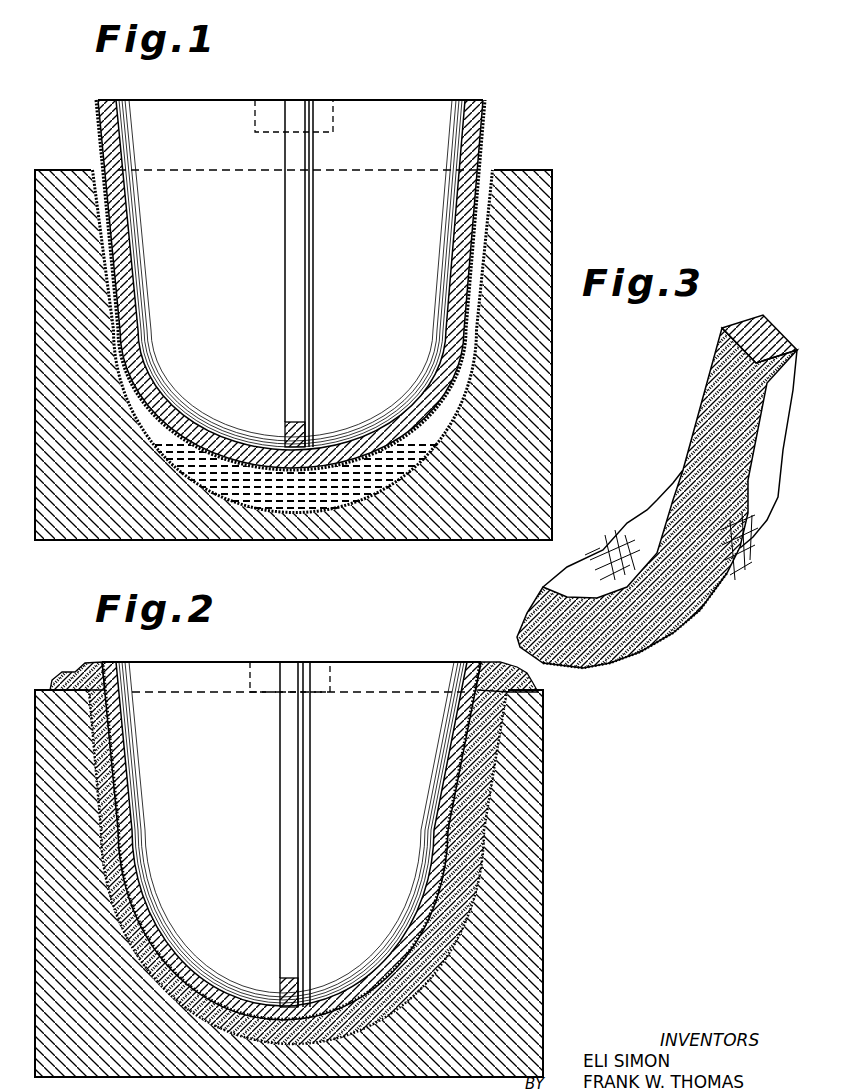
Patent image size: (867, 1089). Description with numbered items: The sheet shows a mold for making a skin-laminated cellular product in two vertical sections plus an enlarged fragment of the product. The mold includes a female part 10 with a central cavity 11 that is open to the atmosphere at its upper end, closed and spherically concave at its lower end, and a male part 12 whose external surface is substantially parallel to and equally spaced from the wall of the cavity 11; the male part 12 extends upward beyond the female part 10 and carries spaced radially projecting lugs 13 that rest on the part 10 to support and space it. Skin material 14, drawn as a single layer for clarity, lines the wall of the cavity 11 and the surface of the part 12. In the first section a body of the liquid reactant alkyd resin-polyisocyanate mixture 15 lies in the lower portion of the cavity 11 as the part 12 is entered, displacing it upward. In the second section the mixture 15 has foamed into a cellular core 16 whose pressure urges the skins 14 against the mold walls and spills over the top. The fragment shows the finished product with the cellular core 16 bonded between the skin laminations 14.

In FIG. 1, the female mold part 10 is at (543, 231).
In FIG. 2, the female mold part 10 is at (527, 941).
In FIG. 1, the central cavity 11 is at (478, 354).
In FIG. 1, the male mold part 12 is at (468, 128).
In FIG. 2, the male mold part 12 is at (453, 802).
In FIG. 1, the radially projecting lugs 13 is at (320, 125).
In FIG. 2, the radially projecting lugs 13 is at (320, 672).
In FIG. 1, the skin material 14 is at (483, 150).
In FIG. 2, the skin material 14 is at (482, 737).
In FIG. 3, the skin material 14 is at (693, 432).
In FIG. 1, the reactant alkyd resin-polyisocyanate mixture 15 is at (356, 477).
In FIG. 2, the cellular core 16 is at (488, 777).
In FIG. 3, the cellular core 16 is at (625, 637).